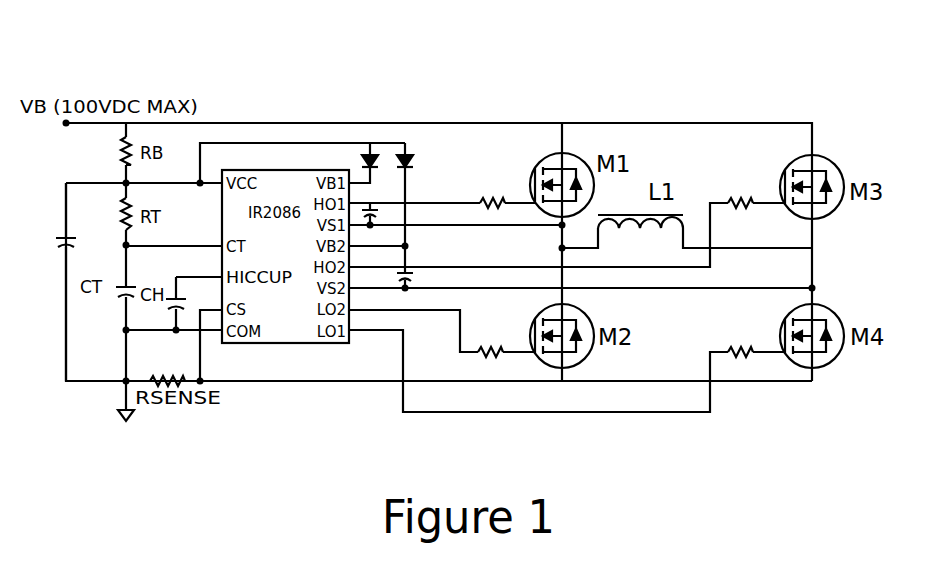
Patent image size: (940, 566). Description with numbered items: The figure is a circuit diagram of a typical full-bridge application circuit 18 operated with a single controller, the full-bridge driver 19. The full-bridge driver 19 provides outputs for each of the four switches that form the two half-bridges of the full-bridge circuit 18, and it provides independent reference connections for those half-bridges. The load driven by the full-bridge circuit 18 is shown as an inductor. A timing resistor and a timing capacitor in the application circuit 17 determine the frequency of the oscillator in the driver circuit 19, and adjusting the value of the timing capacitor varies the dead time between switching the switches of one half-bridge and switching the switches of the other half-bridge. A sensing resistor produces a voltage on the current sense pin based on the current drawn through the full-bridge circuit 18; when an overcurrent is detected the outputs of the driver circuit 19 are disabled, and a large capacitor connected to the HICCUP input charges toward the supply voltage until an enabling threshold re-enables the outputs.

The application circuit 17 is at (436, 463).
The full-bridge circuit 18 is at (703, 96).
The full-bridge driver 19 is at (288, 343).